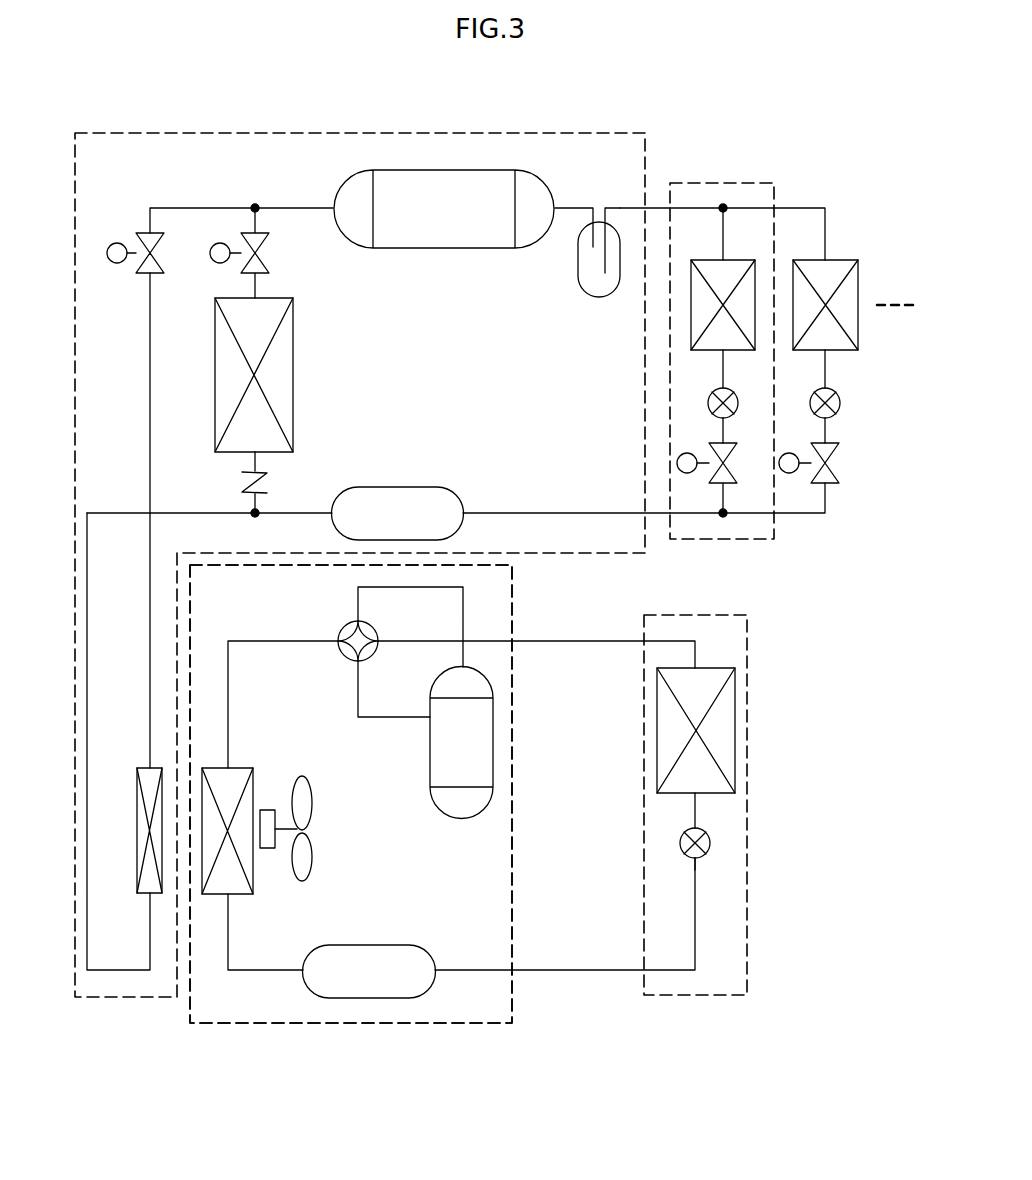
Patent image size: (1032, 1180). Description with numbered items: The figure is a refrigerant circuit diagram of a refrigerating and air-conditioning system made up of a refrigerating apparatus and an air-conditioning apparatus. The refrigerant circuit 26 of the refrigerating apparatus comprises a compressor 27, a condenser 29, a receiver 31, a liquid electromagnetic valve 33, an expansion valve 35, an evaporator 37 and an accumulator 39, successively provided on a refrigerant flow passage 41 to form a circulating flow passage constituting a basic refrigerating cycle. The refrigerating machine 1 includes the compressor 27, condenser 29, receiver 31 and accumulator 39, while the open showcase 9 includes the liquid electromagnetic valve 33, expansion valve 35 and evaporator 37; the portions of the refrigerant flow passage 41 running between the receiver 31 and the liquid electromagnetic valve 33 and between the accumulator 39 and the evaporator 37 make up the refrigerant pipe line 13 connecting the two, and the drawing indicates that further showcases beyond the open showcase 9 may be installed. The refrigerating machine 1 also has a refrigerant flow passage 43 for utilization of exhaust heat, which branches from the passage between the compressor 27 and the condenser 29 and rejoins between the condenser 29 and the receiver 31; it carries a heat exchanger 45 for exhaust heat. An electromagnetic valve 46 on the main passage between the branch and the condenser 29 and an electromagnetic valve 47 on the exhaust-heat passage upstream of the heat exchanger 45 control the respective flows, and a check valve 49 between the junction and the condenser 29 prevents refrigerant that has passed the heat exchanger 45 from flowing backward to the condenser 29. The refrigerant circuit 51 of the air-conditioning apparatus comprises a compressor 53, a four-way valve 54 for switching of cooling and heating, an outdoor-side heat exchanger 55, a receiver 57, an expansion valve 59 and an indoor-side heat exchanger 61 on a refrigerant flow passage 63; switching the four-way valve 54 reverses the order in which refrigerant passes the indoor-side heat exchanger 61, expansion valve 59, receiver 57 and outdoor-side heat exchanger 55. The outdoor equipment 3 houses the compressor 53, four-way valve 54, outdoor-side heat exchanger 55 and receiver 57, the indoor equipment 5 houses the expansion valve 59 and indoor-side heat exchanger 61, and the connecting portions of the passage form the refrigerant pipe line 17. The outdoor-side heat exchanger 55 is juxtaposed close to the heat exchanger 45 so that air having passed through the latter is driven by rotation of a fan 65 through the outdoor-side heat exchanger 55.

The refrigerating machine 1 is at (188, 133).
The outdoor equipment 3 is at (455, 1030).
The indoor equipment 5 is at (702, 1000).
The open showcase 9 is at (729, 183).
The refrigerant pipe line 13 is at (656, 208).
The refrigerant pipe line 17 is at (583, 641).
The refrigerant circuit of the refrigerating apparatus 26 is at (815, 163).
The compressor 27 is at (440, 248).
The condenser 29 is at (293, 373).
The receiver 31 is at (405, 490).
The liquid electromagnetic valve 33 is at (677, 463).
The expansion valve 35 is at (708, 402).
The evaporator 37 is at (692, 328).
The accumulator 39 is at (580, 268).
The refrigerant flow passage 41 is at (289, 208).
The refrigerant flow passage for exhaust heat 43 is at (150, 386).
The heat exchanger for exhaust heat 45 is at (137, 784).
The electromagnetic valve 46 is at (268, 263).
The electromagnetic valve 47 is at (150, 233).
The check valve 49 is at (238, 483).
The refrigerant circuit of the air-conditioning apparatus 51 is at (518, 1028).
The compressor 53 is at (432, 770).
The four-way valve for switching of cooling and heating 54 is at (345, 628).
The outdoor-side heat exchanger 55 is at (253, 784).
The receiver 57 is at (378, 950).
The expansion valve 59 is at (712, 843).
The indoor-side heat exchanger 61 is at (735, 726).
The refrigerant flow passage 63 is at (253, 975).
The fan 65 is at (270, 850).